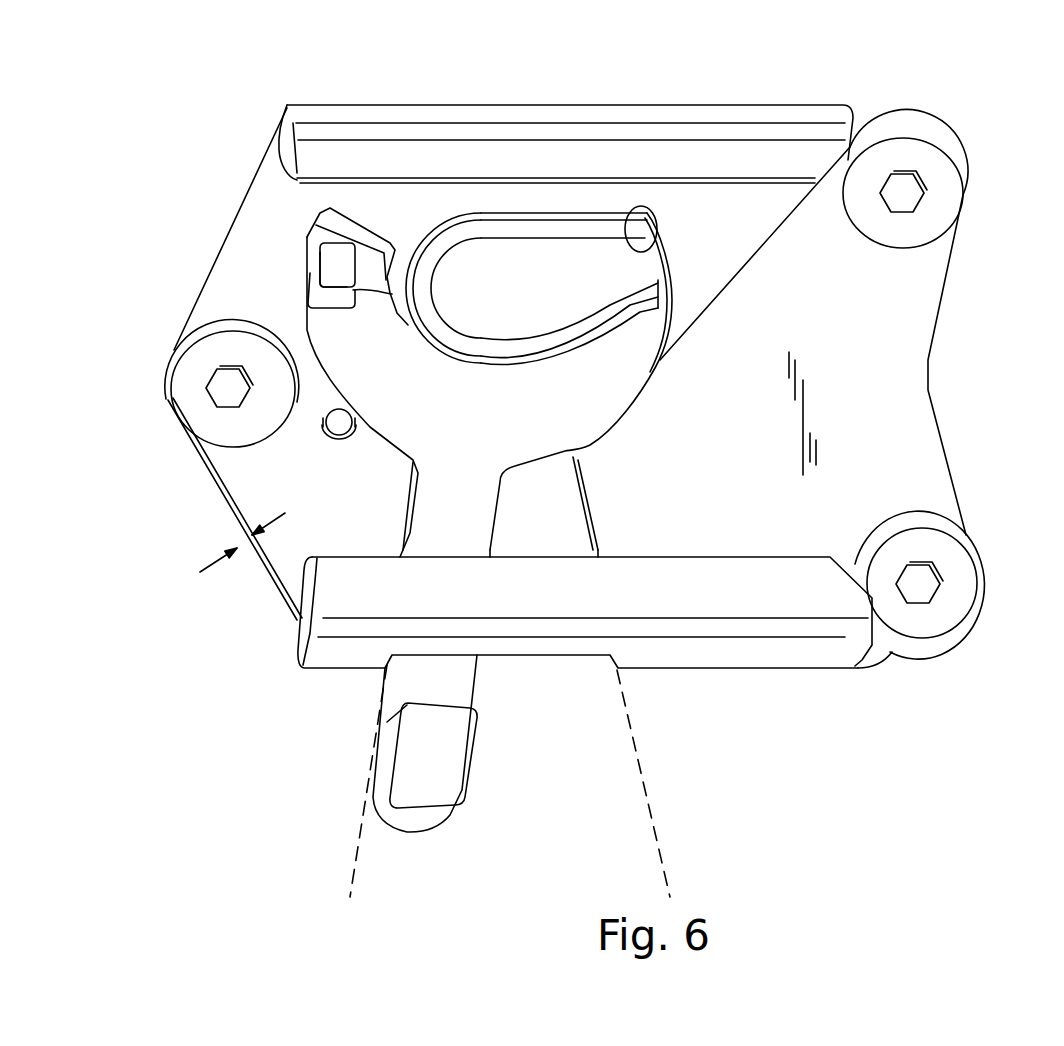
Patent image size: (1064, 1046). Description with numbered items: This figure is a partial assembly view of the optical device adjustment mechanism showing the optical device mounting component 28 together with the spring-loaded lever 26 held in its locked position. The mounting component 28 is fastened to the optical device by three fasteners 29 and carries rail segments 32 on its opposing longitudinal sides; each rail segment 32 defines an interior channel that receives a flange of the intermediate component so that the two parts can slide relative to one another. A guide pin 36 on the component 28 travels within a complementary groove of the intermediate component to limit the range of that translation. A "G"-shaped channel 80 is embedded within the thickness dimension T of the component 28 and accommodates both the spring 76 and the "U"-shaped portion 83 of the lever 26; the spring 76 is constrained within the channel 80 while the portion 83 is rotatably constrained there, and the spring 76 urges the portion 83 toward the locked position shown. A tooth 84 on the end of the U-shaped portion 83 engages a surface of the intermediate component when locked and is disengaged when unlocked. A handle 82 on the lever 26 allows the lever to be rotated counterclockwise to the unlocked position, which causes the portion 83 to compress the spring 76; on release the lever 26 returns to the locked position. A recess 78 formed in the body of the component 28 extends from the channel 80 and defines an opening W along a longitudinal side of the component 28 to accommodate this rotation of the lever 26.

The lever 26 is at (468, 683).
The optical device mounting component 28 is at (925, 360).
The fasteners 29 is at (180, 383).
The rail segments 32 is at (580, 143).
The guide pin 36 is at (315, 442).
The spring 76 is at (493, 223).
The recess 78 is at (563, 548).
The G-shaped channel 80 is at (307, 233).
The handle 82 is at (455, 777).
The U-shaped portion 83 is at (563, 447).
The tooth 84 is at (313, 277).
The thickness dimension T is at (213, 565).
The opening W is at (357, 868).